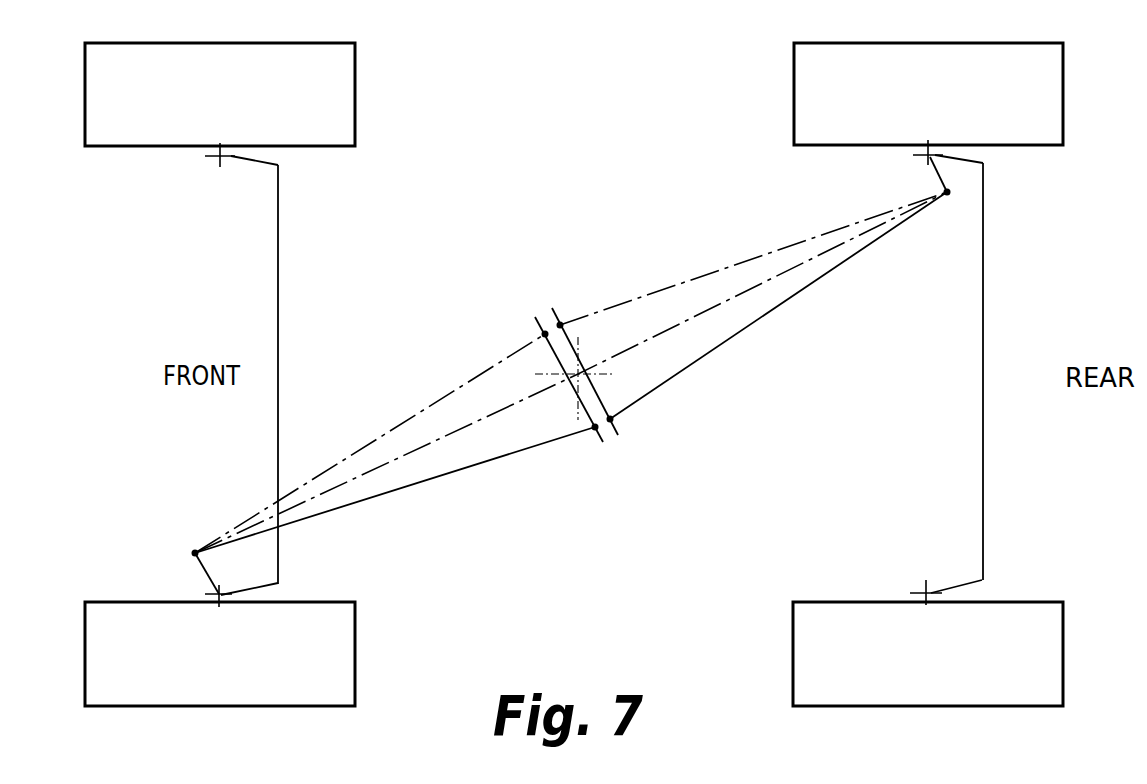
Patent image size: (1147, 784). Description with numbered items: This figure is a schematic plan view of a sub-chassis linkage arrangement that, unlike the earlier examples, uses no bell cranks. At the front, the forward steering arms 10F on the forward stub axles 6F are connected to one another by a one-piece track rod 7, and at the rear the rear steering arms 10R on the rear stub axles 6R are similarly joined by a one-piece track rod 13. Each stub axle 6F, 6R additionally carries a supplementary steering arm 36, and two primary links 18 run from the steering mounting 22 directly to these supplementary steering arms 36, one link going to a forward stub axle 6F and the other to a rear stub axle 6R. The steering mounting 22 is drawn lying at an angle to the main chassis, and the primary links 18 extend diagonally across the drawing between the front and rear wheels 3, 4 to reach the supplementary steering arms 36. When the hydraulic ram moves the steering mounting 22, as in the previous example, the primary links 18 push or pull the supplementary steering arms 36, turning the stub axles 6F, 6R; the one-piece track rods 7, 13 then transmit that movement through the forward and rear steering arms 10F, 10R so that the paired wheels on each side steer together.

The front wheel 3 is at (278, 60).
The rear wheel 4 is at (1012, 62).
The forward stub axle 6F is at (222, 596).
The rear stub axle 6R is at (929, 151).
The one-piece track rod 7 is at (280, 331).
The one-piece track rod 13 is at (985, 359).
The forward steering arm 10F is at (252, 164).
The rear steering arm 10R is at (967, 163).
The primary link 18 is at (490, 462).
The measuring head 22 is at (560, 340).
The supplementary steering arm 36 is at (197, 570).